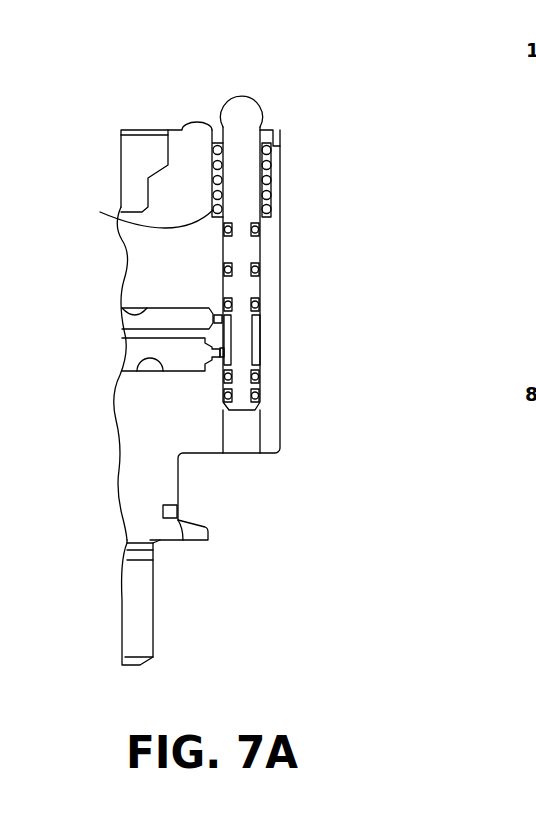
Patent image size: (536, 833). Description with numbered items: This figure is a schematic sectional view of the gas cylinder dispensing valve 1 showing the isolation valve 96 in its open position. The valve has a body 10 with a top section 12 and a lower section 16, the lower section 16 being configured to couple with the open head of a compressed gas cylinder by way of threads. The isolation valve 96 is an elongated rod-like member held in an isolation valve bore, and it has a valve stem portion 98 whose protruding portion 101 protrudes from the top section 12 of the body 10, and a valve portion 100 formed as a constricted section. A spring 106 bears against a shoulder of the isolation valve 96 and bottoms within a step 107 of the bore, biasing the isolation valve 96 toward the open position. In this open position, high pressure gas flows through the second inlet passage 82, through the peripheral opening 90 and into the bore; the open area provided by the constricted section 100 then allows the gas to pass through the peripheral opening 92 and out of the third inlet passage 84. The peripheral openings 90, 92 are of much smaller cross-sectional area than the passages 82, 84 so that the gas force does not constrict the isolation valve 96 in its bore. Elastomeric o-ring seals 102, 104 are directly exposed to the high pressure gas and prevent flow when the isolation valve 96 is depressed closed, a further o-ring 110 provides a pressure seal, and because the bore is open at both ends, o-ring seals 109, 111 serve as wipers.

The gas cylinder dispensing valve 1 is at (340, 512).
The body 10 is at (266, 483).
The top section 12 is at (137, 119).
The lower section 16 is at (167, 615).
The second inlet passage 82 is at (125, 312).
The third inlet passage 84 is at (122, 373).
The peripheral opening 90 is at (221, 316).
The peripheral opening 92 is at (221, 362).
The isolation valve 96 is at (285, 91).
The valve stem portion 98 is at (238, 183).
The valve portion 100 is at (245, 342).
The protruding portion 101 is at (238, 107).
The o-ring seal 102 is at (253, 268).
The o-ring seal 104 is at (258, 305).
The spring 106 is at (267, 187).
The step 107 is at (118, 222).
The o-ring seal 109 is at (253, 229).
The o-ring 110 is at (262, 377).
The o-ring seal 111 is at (260, 397).